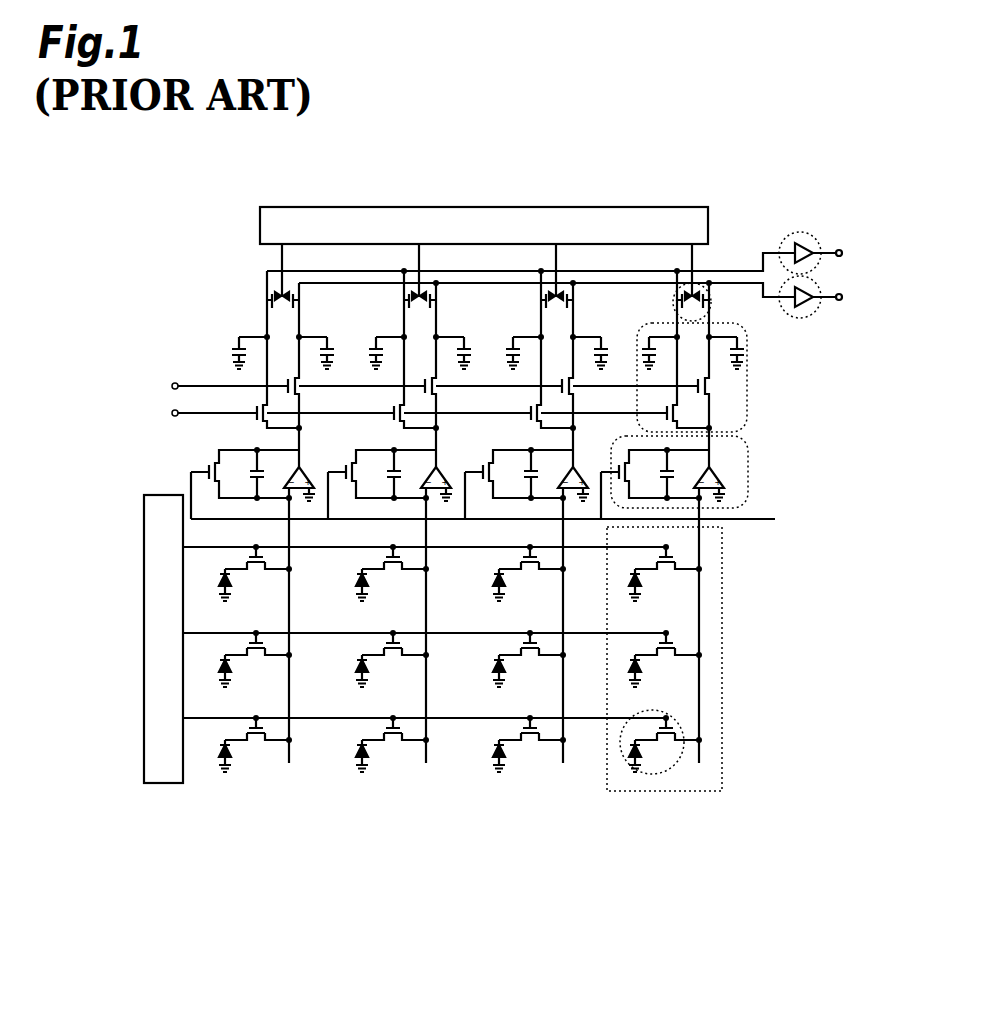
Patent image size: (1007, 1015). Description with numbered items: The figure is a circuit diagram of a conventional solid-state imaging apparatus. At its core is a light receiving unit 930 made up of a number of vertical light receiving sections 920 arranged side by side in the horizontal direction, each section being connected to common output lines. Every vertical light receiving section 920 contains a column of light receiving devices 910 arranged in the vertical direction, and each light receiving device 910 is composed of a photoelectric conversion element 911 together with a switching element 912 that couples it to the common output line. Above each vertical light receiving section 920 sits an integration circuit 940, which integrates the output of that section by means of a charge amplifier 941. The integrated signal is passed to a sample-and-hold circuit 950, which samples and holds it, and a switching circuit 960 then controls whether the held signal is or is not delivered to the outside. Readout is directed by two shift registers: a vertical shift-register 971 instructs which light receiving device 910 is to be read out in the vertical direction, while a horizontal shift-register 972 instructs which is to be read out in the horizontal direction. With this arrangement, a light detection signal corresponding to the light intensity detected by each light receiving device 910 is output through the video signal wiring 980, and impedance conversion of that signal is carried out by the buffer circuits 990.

The light receiving device 910 is at (676, 712).
The photoelectric conversion element 911 is at (650, 772).
The switching element 912 is at (683, 732).
The vertical light receiving section 920 is at (723, 614).
The light receiving unit 930 is at (448, 850).
The integration circuit 940 is at (748, 450).
The charge amplifier 941 is at (722, 470).
The sample-and-hold circuit 950 is at (748, 376).
The switching circuit 960 is at (712, 312).
The vertical shift-register 971 is at (162, 784).
The horizontal shift-register 972 is at (709, 212).
The video signal wiring 980 is at (259, 272).
The buffer circuit 990 is at (822, 289).